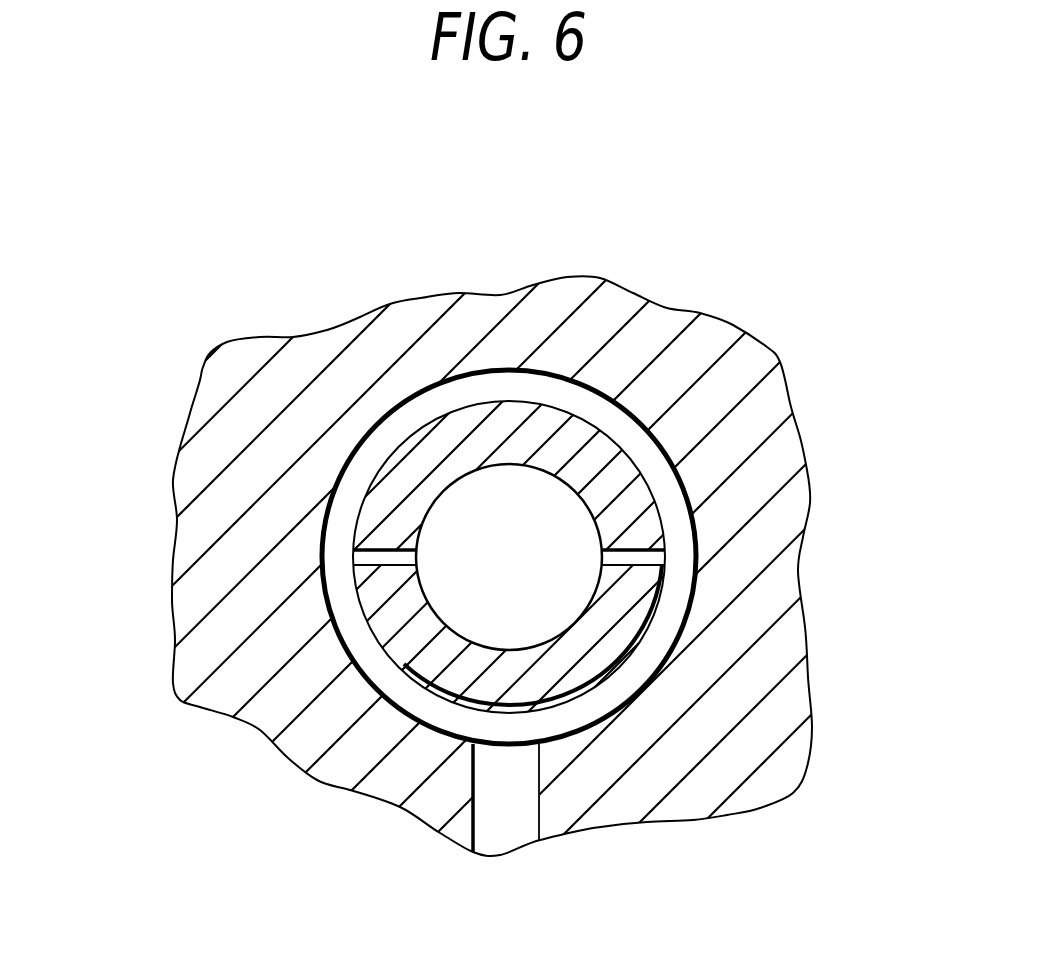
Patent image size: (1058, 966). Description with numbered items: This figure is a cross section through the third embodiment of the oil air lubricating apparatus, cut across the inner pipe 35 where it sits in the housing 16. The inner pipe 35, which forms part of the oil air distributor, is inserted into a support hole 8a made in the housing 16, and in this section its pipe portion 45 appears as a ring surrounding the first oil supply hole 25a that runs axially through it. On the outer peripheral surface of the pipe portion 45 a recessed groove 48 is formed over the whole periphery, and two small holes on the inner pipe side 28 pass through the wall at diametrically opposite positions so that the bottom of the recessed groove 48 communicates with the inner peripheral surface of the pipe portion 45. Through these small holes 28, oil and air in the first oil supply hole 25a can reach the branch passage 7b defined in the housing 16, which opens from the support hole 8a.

The housing 16 is at (550, 297).
The support hole 8a is at (627, 403).
The inner pipe 35 is at (643, 484).
The small holes on the inner pipe side 28 is at (353, 551).
The recessed grooves 48 is at (660, 610).
The pipe portion 45 is at (382, 633).
The first oil supply hole 25a is at (517, 648).
The branch passage 7b is at (473, 800).